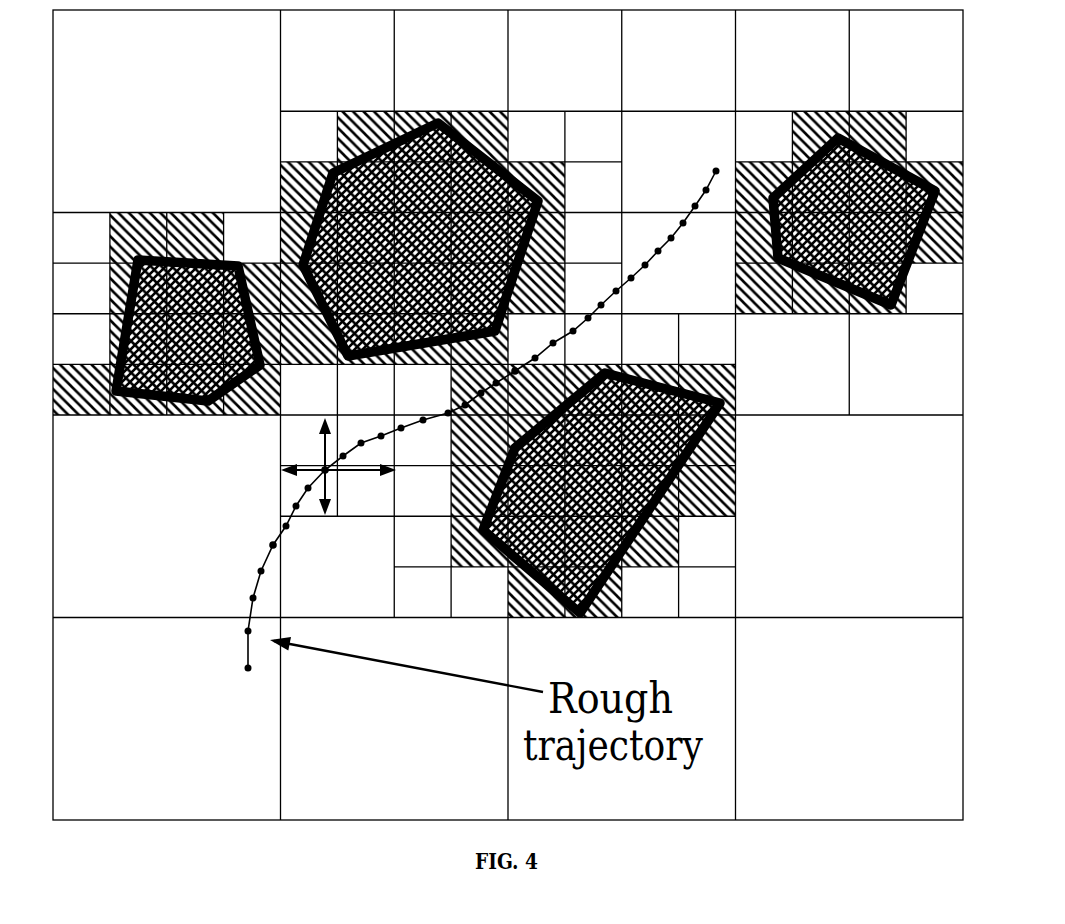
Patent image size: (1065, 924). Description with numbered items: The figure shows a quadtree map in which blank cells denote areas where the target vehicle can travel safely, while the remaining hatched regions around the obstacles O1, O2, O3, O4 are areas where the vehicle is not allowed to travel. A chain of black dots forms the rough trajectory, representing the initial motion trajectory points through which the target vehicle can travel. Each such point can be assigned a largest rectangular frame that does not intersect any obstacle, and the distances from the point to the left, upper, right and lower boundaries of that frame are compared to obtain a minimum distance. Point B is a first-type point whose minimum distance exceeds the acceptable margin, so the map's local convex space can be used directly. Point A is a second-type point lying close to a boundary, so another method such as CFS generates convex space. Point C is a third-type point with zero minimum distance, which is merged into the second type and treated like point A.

The obstacle 1 O1 is at (167, 314).
The obstacle 2 O2 is at (423, 235).
The obstacle 3 O3 is at (593, 490).
The obstacle 4 O4 is at (850, 211).
The second-type initial motion trajectory point A is at (258, 534).
The first-type initial motion trajectory point B is at (299, 460).
The third-type initial trajectory point C is at (525, 361).